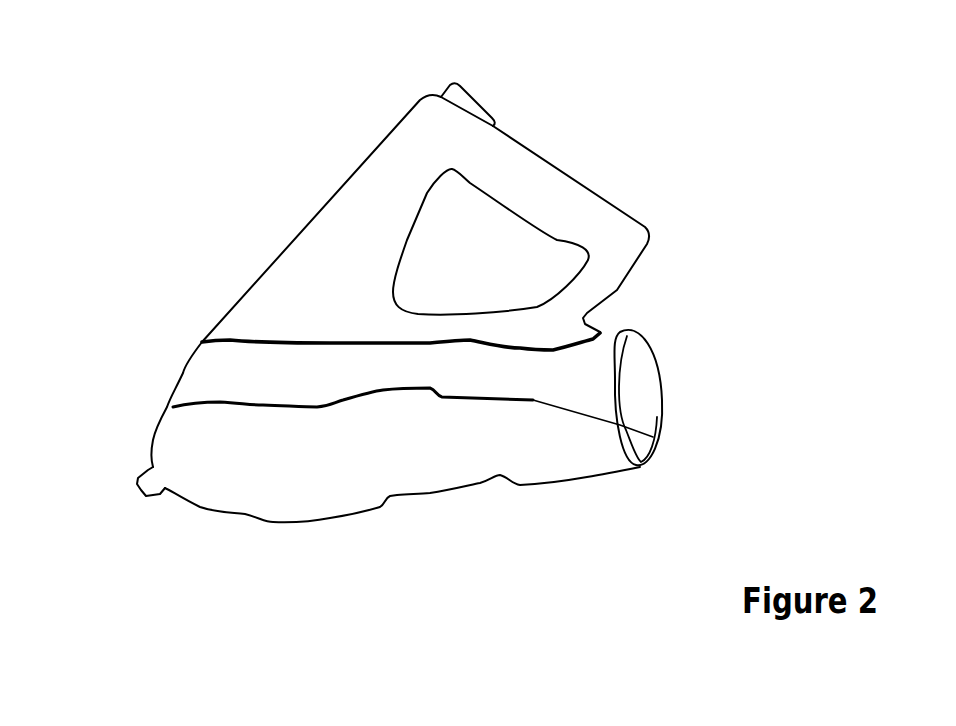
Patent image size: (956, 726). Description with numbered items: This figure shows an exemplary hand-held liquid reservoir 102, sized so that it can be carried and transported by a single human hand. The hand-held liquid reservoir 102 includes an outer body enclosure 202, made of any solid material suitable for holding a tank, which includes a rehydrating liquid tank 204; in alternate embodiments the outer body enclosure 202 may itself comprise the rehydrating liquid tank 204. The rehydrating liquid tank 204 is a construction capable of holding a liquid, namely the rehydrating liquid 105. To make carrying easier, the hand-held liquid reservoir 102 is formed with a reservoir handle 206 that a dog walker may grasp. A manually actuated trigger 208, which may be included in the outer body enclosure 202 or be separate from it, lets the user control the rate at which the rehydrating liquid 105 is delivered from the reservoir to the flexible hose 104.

The hand-held liquid reservoir 102 is at (313, 92).
The outer body enclosure 202 is at (312, 194).
The rehydrating liquid tank 204 is at (199, 341).
The reservoir handle 206 is at (596, 187).
The manually actuated trigger 208 is at (486, 97).
The rehydrating liquid 105 is at (239, 440).
The flexible hose 104 is at (164, 498).